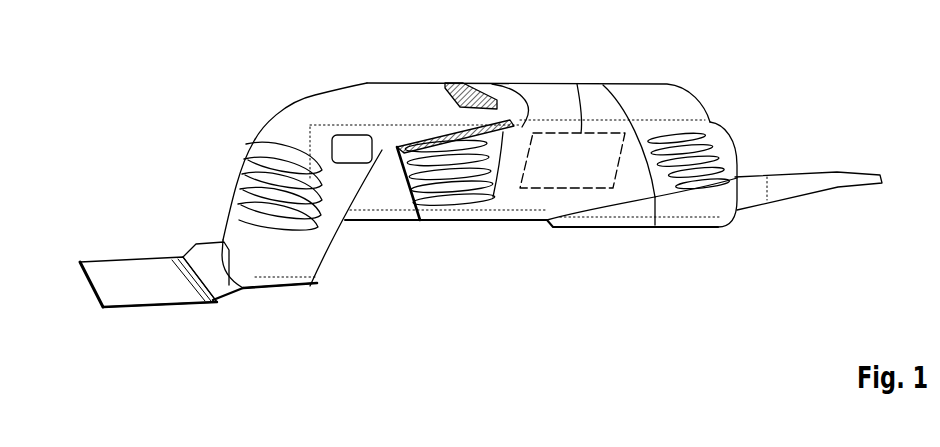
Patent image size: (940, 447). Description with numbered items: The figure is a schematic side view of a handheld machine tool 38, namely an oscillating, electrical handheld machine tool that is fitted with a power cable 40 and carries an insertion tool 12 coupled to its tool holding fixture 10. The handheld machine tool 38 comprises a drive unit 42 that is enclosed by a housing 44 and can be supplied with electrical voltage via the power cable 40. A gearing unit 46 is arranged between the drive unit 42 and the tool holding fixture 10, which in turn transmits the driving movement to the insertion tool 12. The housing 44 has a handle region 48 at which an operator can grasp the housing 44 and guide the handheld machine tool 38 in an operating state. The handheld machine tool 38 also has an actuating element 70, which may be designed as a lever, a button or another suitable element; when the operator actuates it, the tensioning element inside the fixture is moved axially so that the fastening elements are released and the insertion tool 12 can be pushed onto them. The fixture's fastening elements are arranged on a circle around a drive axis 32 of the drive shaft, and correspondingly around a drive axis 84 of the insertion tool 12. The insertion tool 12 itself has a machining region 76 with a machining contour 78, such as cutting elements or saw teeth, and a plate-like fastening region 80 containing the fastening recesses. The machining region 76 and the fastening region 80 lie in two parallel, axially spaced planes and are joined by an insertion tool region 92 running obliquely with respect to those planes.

The tool holding fixture 10 is at (298, 345).
The insertion tool 12 is at (150, 335).
The drive axis 32 is at (327, 83).
The drive axis 84 is at (280, 186).
The handheld machine tool 38 is at (410, 67).
The power cable 40 is at (795, 178).
The drive unit 42 is at (580, 133).
The housing 44 is at (400, 255).
The gearing unit 46 is at (487, 84).
The handle region 48 is at (545, 103).
The actuating element 70 is at (360, 134).
The machining region 76 is at (127, 270).
The machining contour 78 is at (87, 283).
The fastening region 80 is at (220, 320).
The insertion tool region 92 is at (200, 257).